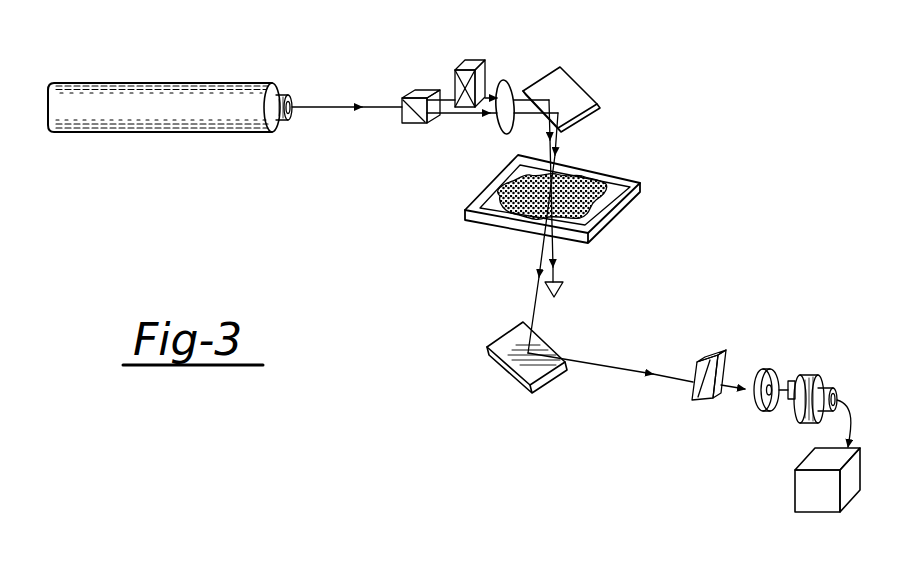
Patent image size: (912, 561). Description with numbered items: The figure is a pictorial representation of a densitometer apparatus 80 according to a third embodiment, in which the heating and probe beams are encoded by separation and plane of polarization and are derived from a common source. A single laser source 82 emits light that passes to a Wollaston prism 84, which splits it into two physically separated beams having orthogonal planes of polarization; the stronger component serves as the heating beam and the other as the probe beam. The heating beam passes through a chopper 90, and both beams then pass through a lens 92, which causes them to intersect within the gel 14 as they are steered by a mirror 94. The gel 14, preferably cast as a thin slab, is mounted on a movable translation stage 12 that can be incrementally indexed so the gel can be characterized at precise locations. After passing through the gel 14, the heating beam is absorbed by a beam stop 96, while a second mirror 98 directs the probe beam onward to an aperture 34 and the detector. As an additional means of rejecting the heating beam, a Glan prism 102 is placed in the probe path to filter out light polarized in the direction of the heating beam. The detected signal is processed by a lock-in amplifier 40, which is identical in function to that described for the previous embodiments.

The laser source 82 is at (215, 83).
The Wollaston prism 84 is at (415, 90).
The chopper 90 is at (475, 63).
The lens 92 is at (502, 131).
The mirror 94 is at (587, 87).
The densitometer apparatus 80 is at (662, 100).
The gel 14 is at (587, 195).
The translation stage 12 is at (463, 212).
The beam stop 96 is at (563, 285).
The mirror 98 is at (513, 373).
The Glan prism 102 is at (717, 353).
The aperture 34 is at (770, 369).
The lock-in amplifier 40 is at (802, 492).